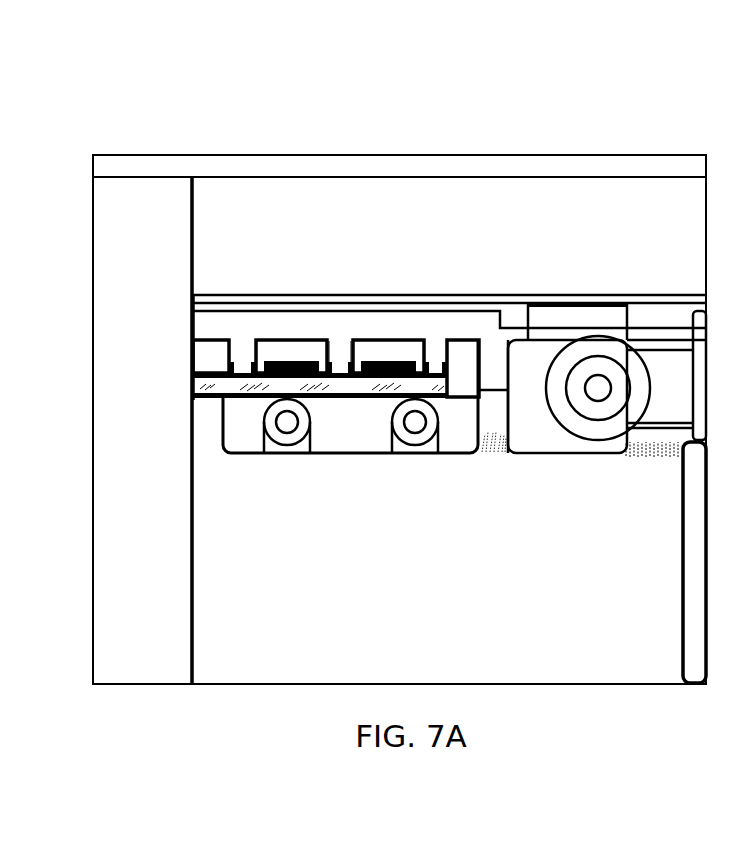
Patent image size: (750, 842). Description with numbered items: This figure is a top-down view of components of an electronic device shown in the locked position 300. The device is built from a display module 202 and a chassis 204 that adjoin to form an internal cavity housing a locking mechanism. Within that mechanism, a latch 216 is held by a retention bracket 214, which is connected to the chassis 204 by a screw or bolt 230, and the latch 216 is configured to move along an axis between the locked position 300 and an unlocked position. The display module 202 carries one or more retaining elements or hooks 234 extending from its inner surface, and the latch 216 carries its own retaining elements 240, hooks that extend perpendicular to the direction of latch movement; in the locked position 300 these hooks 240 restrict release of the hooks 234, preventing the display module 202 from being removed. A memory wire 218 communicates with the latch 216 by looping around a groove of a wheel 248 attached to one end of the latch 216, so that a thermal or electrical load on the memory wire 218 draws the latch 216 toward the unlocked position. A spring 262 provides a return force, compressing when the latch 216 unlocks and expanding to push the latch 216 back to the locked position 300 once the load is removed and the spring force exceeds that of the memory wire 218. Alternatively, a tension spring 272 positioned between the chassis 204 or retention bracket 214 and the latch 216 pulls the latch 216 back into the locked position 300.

The locked position 300 is at (365, 105).
The display module 202 is at (218, 380).
The chassis 204 is at (465, 602).
The retention bracket 214 is at (354, 440).
The latch 216 is at (427, 327).
The memory wire 218 is at (648, 352).
The screw or bolt 230 is at (417, 458).
The retaining elements or hooks 234 is at (318, 345).
The retaining element 240 is at (343, 348).
The wheel 248 is at (595, 424).
The spring 262 is at (643, 458).
The tension spring 272 is at (495, 452).